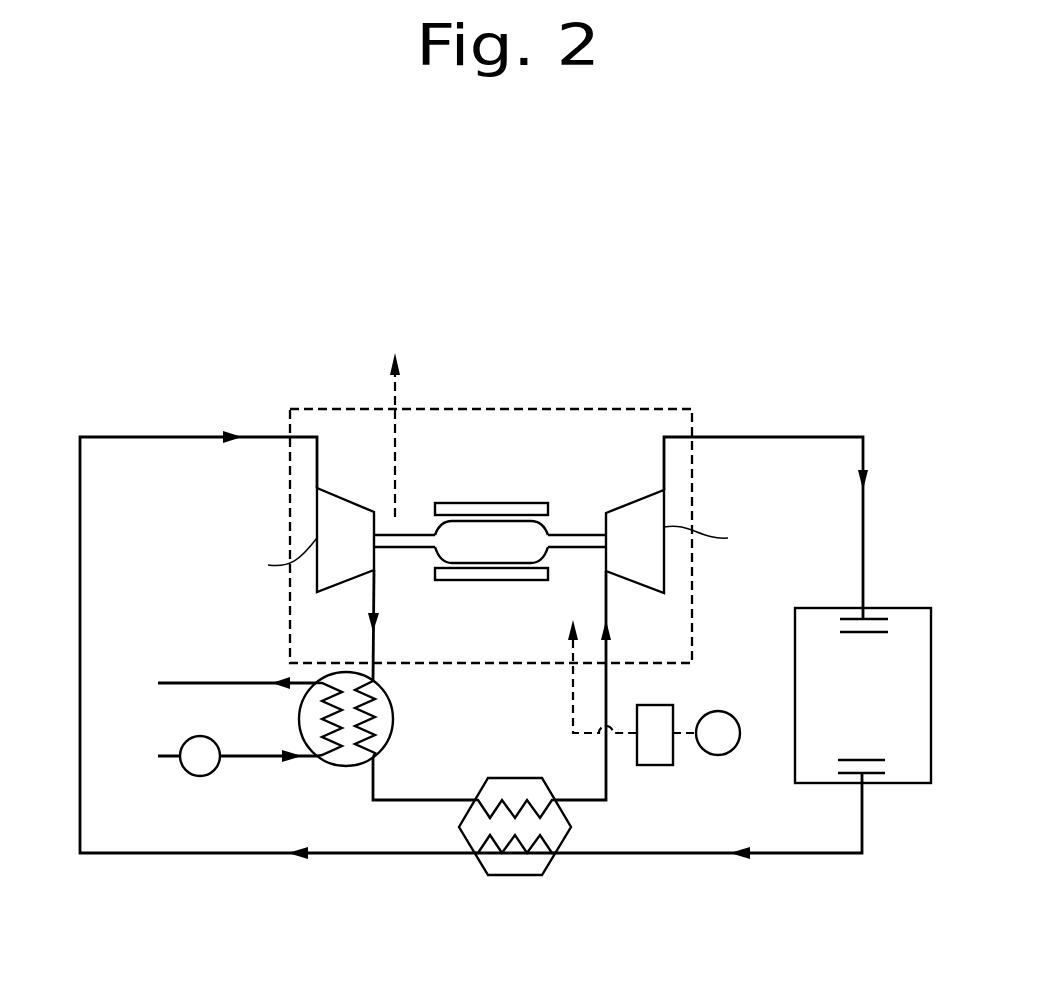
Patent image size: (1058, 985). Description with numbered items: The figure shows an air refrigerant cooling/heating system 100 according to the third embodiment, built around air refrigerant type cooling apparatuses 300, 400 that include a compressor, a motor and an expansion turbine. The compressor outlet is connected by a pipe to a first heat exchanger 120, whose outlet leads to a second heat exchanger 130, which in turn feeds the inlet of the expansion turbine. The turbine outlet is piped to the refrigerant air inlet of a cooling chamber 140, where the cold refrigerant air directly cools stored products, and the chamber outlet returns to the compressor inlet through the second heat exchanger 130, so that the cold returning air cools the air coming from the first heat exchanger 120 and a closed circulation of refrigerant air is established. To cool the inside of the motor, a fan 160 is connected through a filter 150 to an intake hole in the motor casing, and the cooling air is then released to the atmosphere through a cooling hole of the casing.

The air refrigerant cooling/heating system 100 is at (505, 592).
The air refrigerant type cooling apparatus 300 is at (628, 409).
The air refrigerant type cooling apparatus 400 is at (490, 540).
The first heat exchanger 120 is at (345, 767).
The second heat exchanger 130 is at (517, 875).
The cooling chamber 140 is at (893, 783).
The filter 150 is at (655, 765).
The fan 160 is at (718, 755).